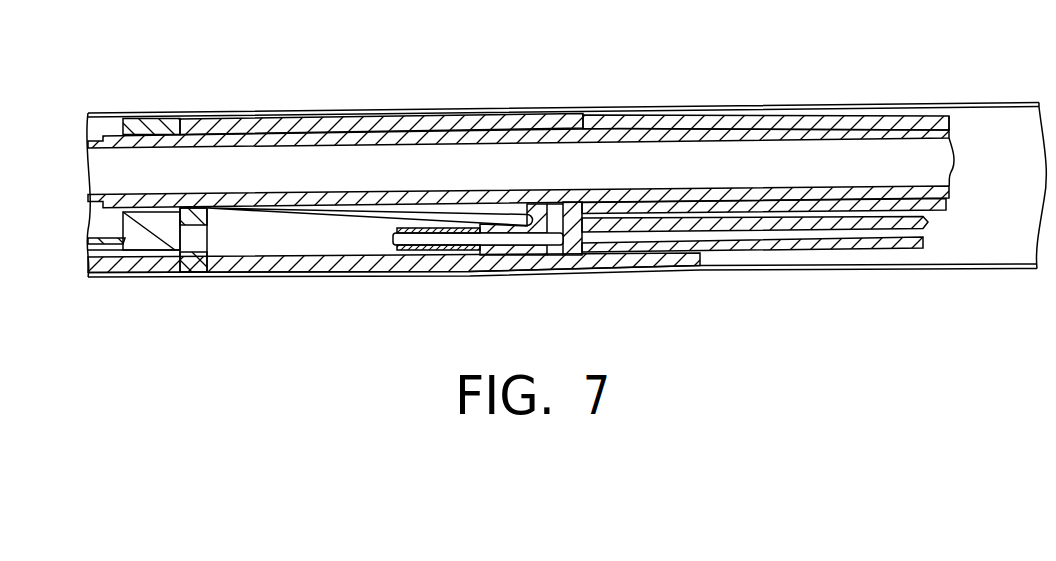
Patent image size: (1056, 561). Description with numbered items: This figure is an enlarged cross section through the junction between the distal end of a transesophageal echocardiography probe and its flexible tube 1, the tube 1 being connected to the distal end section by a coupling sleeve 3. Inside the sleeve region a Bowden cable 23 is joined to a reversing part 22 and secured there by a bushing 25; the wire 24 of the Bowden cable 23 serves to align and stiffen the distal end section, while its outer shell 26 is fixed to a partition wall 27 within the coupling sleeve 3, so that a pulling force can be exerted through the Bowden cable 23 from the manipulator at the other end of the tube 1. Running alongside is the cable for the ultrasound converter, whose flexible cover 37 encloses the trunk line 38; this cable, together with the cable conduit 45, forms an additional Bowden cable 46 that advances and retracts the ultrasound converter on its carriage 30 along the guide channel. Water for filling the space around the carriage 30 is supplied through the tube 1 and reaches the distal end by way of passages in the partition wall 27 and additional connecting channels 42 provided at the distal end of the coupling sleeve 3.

The flexible tube 1 is at (1009, 268).
The coupling sleeve 3 is at (583, 117).
The carriage 30 is at (149, 124).
The cable conduit 45 is at (886, 126).
The additional Bowden cable 46 is at (960, 126).
The trunk line 38 is at (955, 167).
The flexible cover 37 is at (953, 193).
The connecting channels 42 is at (196, 244).
The bushing 25 is at (403, 248).
The wire 24 is at (458, 243).
The reversing part 22 is at (522, 254).
The partition wall 27 is at (584, 230).
The outer shell 26 is at (710, 246).
The Bowden cable 23 is at (814, 270).